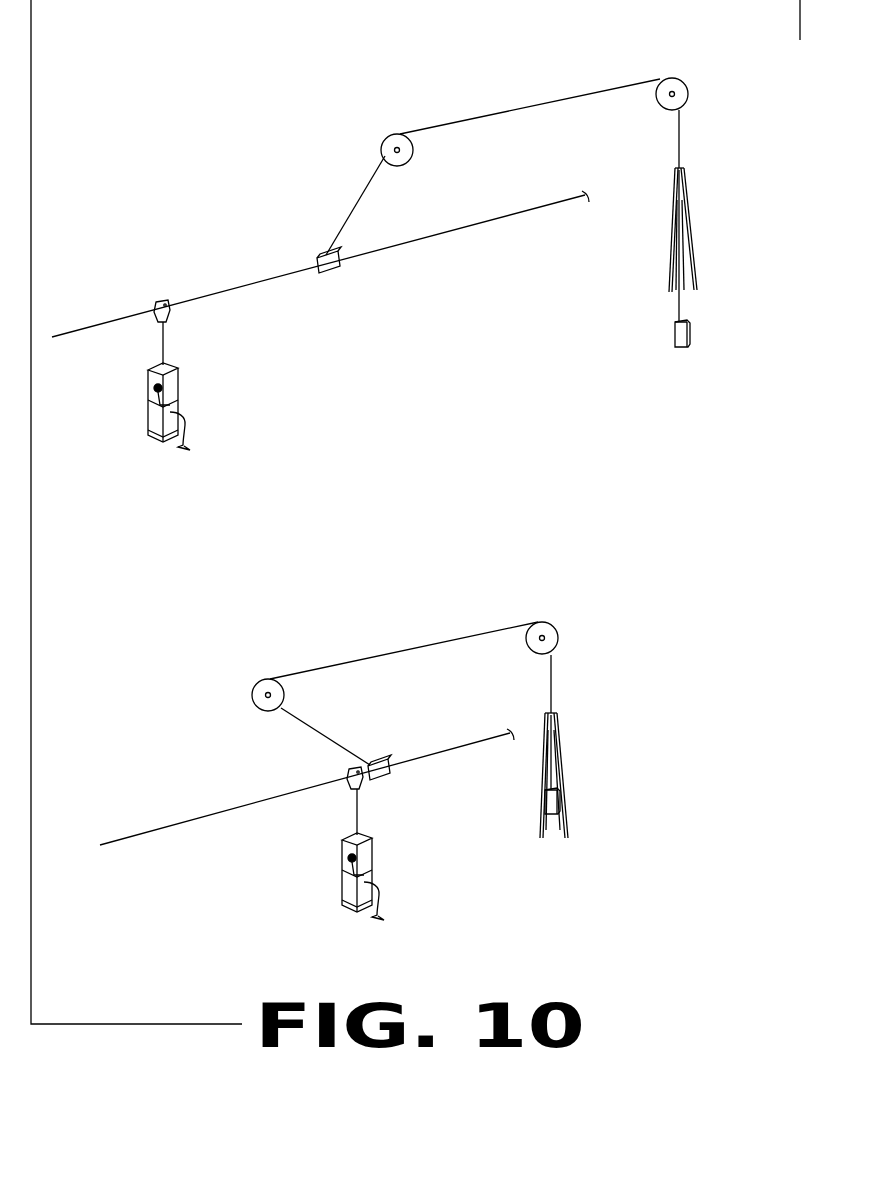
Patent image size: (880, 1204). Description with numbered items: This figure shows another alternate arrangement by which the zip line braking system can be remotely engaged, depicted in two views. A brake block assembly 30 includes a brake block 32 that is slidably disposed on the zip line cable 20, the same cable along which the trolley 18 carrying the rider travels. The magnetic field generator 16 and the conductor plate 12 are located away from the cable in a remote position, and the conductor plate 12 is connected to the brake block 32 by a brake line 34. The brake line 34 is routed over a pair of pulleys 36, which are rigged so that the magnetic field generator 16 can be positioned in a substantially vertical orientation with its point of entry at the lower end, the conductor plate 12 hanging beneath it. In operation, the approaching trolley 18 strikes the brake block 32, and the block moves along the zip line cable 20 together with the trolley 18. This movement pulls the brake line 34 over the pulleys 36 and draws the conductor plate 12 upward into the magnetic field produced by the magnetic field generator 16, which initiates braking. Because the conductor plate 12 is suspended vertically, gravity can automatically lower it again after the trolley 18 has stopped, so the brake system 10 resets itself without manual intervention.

The brake system 10 is at (110, 102).
The conductor plate 12 is at (675, 331).
The magnetic field generator 16 is at (695, 293).
The trolley 18 is at (158, 300).
The zip line cable 20 is at (232, 292).
The brake block assembly 30 is at (306, 141).
The brake block 32 is at (340, 268).
The brake line 34 is at (525, 105).
The pulleys 36 is at (393, 147).